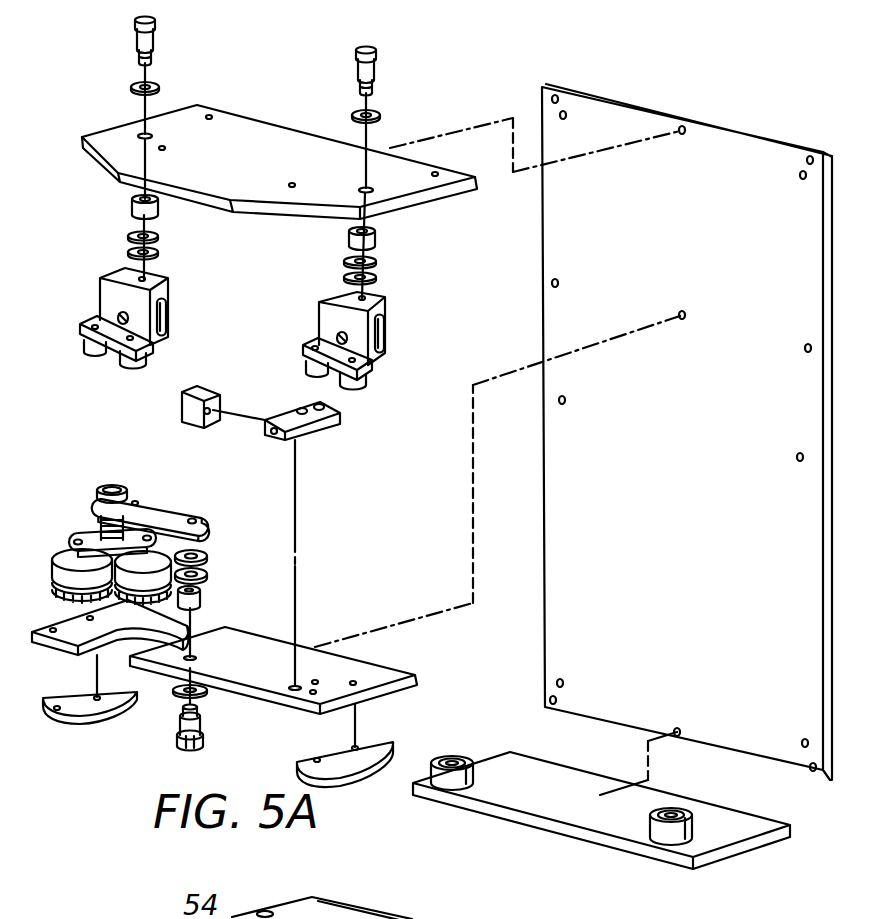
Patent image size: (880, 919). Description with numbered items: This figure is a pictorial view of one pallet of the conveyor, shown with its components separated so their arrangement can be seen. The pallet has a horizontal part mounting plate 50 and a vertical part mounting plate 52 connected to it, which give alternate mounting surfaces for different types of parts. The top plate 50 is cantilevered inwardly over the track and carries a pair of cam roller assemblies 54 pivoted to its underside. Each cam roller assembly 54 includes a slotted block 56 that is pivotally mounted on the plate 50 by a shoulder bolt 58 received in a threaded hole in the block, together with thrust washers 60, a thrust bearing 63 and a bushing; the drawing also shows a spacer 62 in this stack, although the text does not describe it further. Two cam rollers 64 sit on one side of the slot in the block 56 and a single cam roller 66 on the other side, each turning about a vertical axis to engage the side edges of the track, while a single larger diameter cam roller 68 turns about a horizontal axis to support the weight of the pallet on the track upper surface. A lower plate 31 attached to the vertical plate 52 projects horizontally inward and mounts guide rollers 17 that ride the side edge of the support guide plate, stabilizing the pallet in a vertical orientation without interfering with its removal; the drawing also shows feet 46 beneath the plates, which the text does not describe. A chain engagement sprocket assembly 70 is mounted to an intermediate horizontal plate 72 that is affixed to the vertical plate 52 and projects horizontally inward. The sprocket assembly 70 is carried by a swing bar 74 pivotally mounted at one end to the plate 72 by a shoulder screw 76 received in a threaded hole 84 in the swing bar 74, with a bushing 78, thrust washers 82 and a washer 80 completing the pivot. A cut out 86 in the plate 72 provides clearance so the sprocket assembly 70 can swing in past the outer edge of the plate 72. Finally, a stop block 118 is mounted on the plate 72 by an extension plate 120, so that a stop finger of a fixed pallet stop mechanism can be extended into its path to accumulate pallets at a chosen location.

The guide rollers 17 is at (457, 762).
The lower plate 31 is at (730, 835).
The foot 46 is at (88, 715).
The horizontal part mounting plate 50 is at (259, 137).
The vertical part mounting plate 52 is at (718, 138).
The cam roller assembly 54 is at (107, 268).
The slotted block 56 is at (100, 295).
The shoulder bolt 58 is at (158, 32).
The thrust washers 60 is at (119, 128).
The spacer 62 is at (160, 210).
The thrust bearing 63 is at (160, 87).
The cam rollers 64 is at (105, 365).
The cam roller 66 is at (170, 330).
The cam roller 68 is at (167, 306).
The chain engagement sprocket assembly 70 is at (78, 532).
The intermediate horizontal plate 72 is at (306, 643).
The swing bar 74 is at (160, 507).
The shoulder screw 76 is at (202, 728).
The bushing 78 is at (206, 574).
The washer 80 is at (207, 695).
The thrust washers 82 is at (206, 554).
The threaded hole 84 is at (194, 517).
The cut out 86 is at (190, 628).
The stop block 118 is at (205, 384).
The extension plate 120 is at (322, 428).